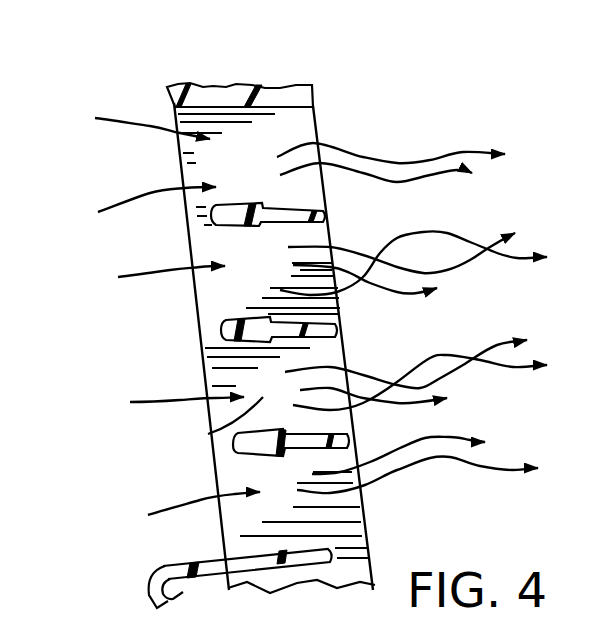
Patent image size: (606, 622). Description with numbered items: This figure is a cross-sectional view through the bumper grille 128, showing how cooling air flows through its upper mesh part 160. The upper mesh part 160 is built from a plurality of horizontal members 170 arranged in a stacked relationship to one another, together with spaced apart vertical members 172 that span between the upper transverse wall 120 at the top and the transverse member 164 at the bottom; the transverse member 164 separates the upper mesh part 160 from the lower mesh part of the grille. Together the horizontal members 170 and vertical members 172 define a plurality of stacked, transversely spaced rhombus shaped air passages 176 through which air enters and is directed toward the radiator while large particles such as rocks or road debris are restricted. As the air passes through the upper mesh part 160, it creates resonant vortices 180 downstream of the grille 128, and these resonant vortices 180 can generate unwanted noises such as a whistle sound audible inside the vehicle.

The upper transverse wall 120 is at (235, 98).
The bumper grille 128 is at (140, 253).
The upper mesh part 160 is at (185, 304).
The transverse member 164 is at (175, 568).
The horizontal members 170 is at (297, 201).
The vertical members 172 is at (227, 366).
The rhombus shaped air passages 176 is at (187, 172).
The resonant vortices 180 is at (467, 233).